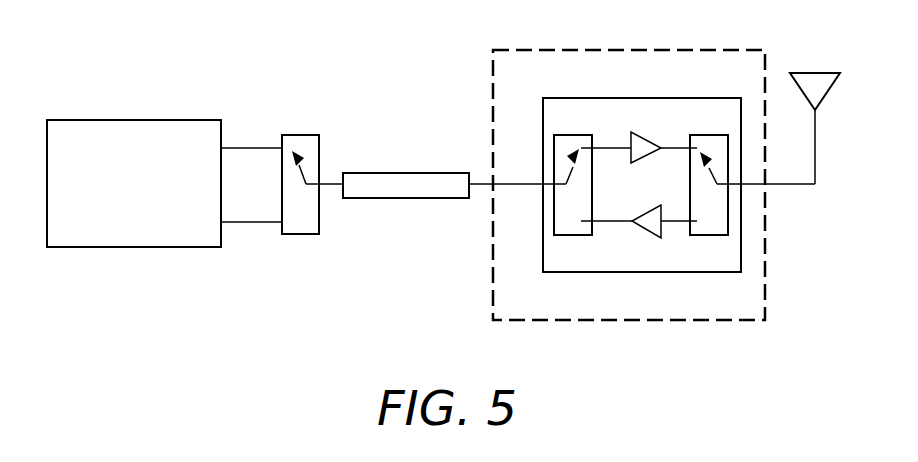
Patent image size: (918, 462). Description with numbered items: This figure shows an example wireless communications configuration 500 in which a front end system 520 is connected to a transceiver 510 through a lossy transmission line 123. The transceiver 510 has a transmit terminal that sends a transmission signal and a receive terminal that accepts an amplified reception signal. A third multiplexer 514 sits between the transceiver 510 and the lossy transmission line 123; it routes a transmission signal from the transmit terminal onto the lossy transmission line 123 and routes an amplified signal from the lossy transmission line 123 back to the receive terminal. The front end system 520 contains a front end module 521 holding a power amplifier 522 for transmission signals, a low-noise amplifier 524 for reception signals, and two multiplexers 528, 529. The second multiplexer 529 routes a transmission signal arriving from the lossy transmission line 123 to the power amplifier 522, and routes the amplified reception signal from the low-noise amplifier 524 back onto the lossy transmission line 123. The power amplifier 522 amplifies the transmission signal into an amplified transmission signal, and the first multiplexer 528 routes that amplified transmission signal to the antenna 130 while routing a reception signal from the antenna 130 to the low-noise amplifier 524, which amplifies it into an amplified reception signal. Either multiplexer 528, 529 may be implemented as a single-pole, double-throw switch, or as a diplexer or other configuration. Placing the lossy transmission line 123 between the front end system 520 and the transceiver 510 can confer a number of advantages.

The wireless communications configuration 500 is at (188, 65).
The transceiver 510 is at (132, 120).
The third multiplexer 514 is at (303, 234).
The lossy transmission line 123 is at (436, 173).
The front end system 520 is at (517, 50).
The front end module 521 is at (690, 272).
The power amplifier 522 is at (648, 132).
The low-noise amplifier 524 is at (650, 238).
The first multiplexer 528 is at (717, 235).
The second multiplexer 529 is at (563, 235).
The antenna 130 is at (811, 72).